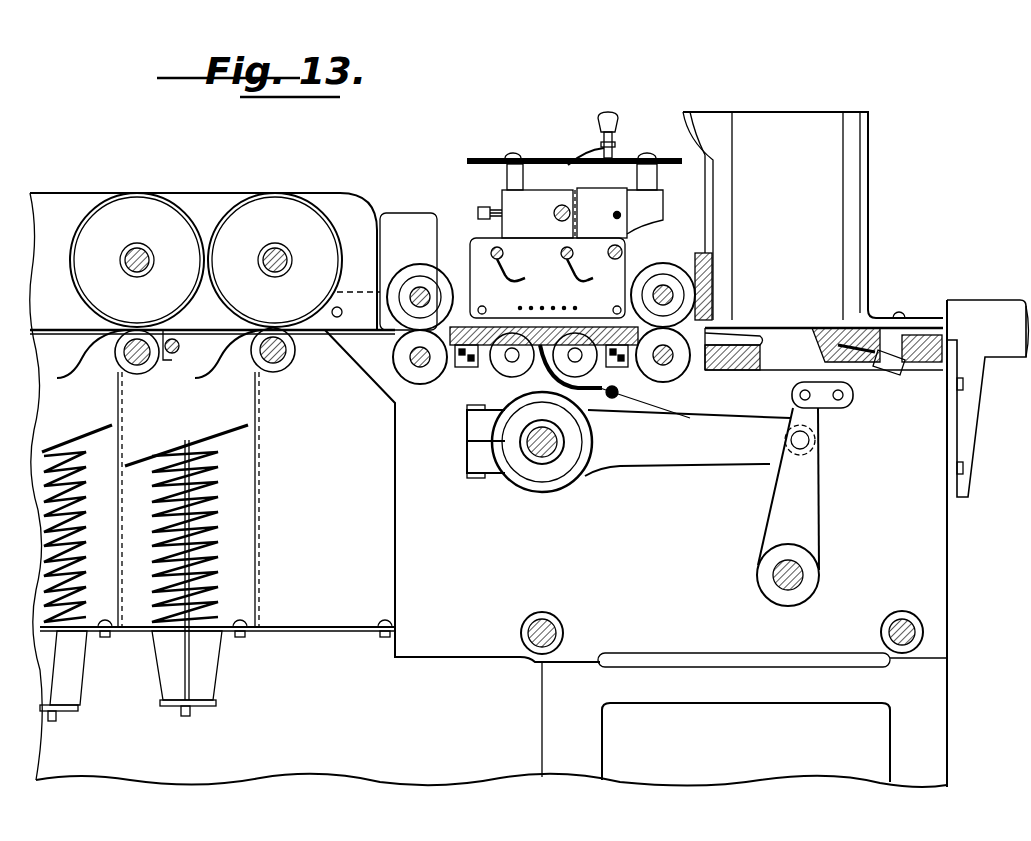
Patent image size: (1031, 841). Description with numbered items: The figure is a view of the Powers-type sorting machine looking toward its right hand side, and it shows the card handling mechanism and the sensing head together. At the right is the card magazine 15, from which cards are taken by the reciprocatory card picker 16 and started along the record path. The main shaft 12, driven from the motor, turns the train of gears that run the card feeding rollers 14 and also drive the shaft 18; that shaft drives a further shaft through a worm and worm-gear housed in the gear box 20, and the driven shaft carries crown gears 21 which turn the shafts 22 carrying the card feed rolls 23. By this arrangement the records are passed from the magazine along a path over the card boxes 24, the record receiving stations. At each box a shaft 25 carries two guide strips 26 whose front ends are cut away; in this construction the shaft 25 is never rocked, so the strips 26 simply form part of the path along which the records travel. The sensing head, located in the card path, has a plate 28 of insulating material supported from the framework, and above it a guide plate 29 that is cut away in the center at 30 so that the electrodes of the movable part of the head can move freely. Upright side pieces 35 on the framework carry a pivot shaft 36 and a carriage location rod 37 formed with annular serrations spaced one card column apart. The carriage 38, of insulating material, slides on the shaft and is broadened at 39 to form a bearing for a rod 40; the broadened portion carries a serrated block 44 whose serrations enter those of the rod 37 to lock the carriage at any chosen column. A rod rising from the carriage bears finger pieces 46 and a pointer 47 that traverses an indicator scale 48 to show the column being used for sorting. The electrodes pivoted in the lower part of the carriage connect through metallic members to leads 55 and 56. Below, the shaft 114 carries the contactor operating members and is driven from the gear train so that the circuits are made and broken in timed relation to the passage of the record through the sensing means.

The main shaft 12 is at (700, 292).
The card feeding rollers 14 is at (420, 380).
The card magazine 15 is at (830, 207).
The reciprocatory card picker 16 is at (852, 362).
The shaft 18 is at (420, 290).
The gear box 20 is at (415, 218).
The crown gears 21 is at (177, 340).
The shafts 22 is at (137, 255).
The card feed rolls 23 is at (250, 215).
The card boxes 24 is at (145, 510).
The shaft 25 is at (140, 367).
The guide strips 26 is at (150, 334).
The plate 28 is at (492, 348).
The guide plate 29 is at (600, 326).
The cut-away 30 is at (505, 326).
The upright side pieces 35 is at (507, 200).
The pivot shaft 36 is at (623, 251).
The carriage location rod 37 is at (553, 213).
The carriage 38 is at (547, 278).
The broadened portion 39 is at (602, 213).
The rod 40 is at (622, 215).
The serrated block 44 is at (574, 190).
The finger pieces 46 is at (618, 120).
The pointer 47 is at (566, 160).
The indicator scale 48 is at (535, 158).
The lead 55 is at (503, 275).
The lead 56 is at (572, 276).
The shaft 114 is at (536, 455).